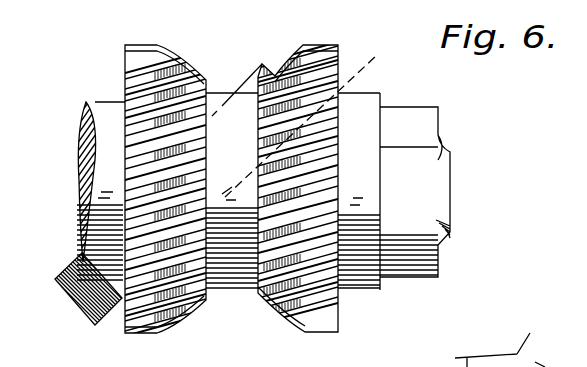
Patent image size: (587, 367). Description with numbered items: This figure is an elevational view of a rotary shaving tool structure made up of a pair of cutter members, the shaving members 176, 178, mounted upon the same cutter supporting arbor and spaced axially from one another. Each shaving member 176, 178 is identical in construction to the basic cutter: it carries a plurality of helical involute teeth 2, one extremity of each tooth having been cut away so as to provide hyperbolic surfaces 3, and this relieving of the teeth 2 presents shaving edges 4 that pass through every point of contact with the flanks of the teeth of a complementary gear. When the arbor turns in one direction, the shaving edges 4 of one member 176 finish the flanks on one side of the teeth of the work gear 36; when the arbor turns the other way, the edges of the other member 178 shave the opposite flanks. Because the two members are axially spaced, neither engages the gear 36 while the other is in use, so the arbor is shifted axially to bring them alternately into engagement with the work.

The shaving member 176 is at (120, 49).
The shaving member 178 is at (344, 50).
The helical involute teeth 2 is at (338, 110).
The hyperbolic surfaces 3 is at (258, 298).
The shaving edges 4 is at (288, 268).
The gear 36 is at (97, 322).